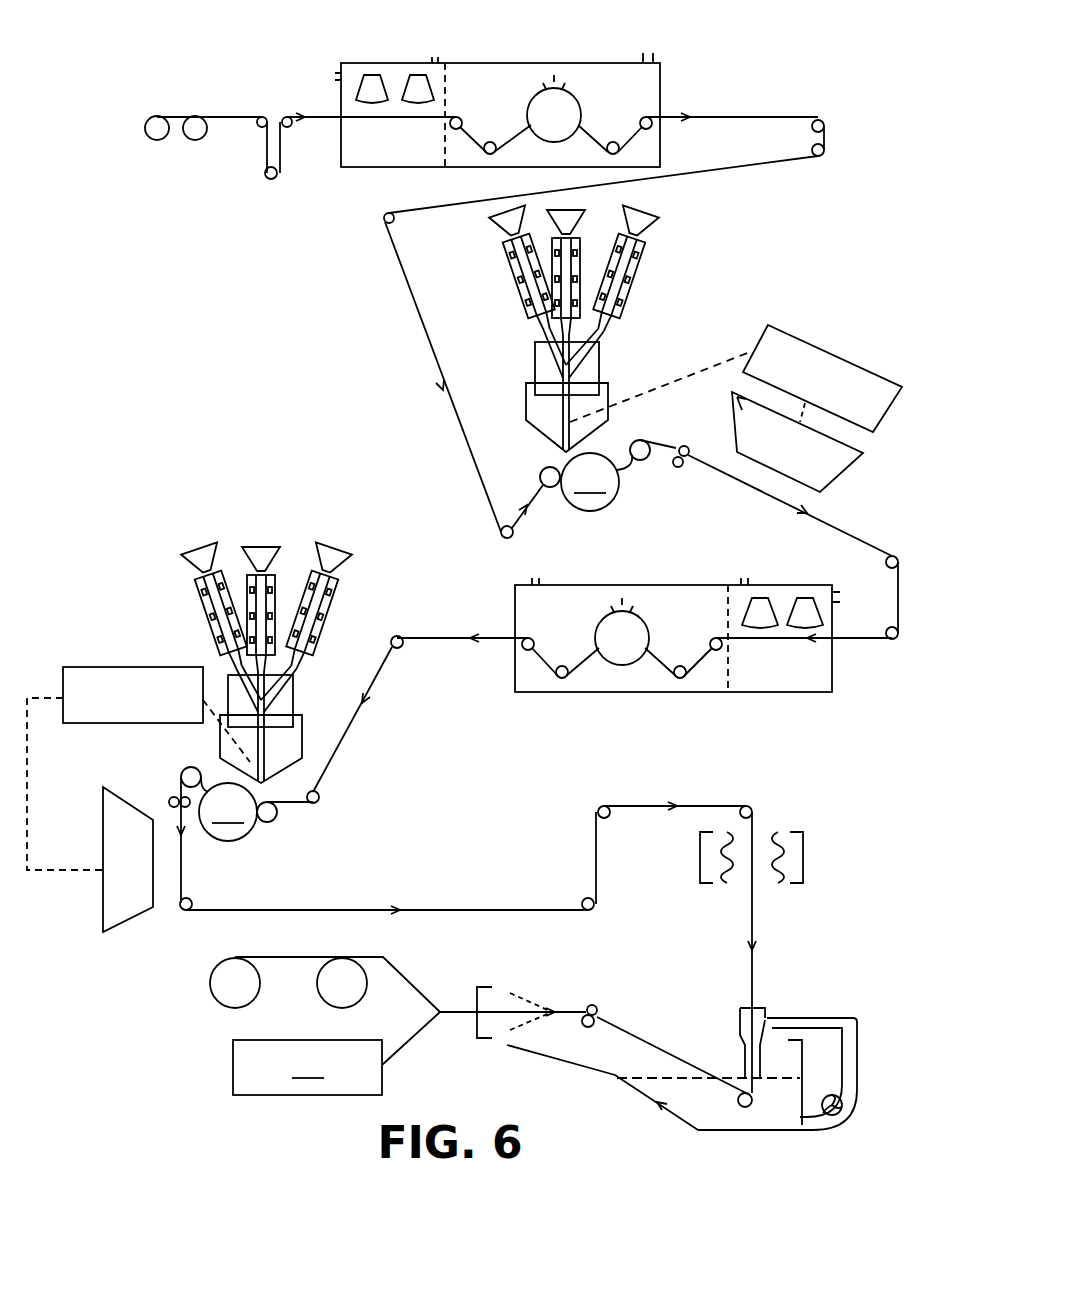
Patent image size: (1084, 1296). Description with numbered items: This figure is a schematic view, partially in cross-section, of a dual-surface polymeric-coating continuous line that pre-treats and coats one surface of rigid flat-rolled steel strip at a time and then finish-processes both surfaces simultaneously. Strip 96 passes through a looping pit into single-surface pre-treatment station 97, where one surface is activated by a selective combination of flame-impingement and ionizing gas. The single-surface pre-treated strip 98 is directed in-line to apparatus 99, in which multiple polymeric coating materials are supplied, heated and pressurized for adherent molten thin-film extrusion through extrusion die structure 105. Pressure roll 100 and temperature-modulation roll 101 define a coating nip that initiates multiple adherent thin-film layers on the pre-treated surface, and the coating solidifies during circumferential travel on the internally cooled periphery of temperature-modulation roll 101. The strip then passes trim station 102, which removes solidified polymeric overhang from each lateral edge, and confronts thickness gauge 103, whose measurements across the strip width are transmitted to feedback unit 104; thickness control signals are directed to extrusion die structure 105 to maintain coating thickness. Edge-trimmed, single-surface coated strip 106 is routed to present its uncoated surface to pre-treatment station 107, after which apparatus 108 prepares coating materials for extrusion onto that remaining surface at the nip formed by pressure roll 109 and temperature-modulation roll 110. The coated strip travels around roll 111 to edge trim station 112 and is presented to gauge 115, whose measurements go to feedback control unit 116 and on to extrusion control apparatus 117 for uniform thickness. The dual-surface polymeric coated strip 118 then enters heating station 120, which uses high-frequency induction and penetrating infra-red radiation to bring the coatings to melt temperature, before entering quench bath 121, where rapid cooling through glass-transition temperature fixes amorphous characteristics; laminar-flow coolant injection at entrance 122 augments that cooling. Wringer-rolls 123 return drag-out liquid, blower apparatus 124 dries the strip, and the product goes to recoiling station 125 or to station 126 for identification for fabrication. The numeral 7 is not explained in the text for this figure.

The strip 96 is at (185, 112).
The single-surface pre-treatment station 97 is at (395, 63).
The single-surface pre-treated strip 98 is at (422, 318).
The apparatus 99 is at (648, 260).
The pressure roll 100 is at (542, 467).
The temperature-modulation roll 101 is at (590, 482).
The trim station 102 is at (678, 438).
The thickness gauge 103 is at (730, 392).
The feedback unit 104 is at (826, 363).
The extrusion die structure 105 is at (530, 407).
The edge-trimmed, single-surface coated strip 106 is at (870, 530).
The pre-treatment station 107 is at (642, 585).
The apparatus 108 is at (341, 604).
The pressure roll 109 is at (277, 820).
The temperature-modulation roll 110 is at (228, 812).
The roll 111 is at (183, 770).
The edge trim station 112 is at (170, 800).
The gauge 115 is at (100, 920).
The feedback control unit 116 is at (100, 665).
The extrusion control apparatus 117 is at (306, 739).
The dual-surface polymeric coated strip 118 is at (470, 908).
The heating station 120 is at (805, 860).
The quench bath 121 is at (704, 1105).
The entrance 122 is at (740, 1030).
The wringer-rolls 123 is at (613, 1011).
The blower apparatus 124 is at (527, 1002).
The recoiling station 125 is at (280, 1001).
The station 126 is at (336, 1053).
The layer 7 is at (587, 1053).